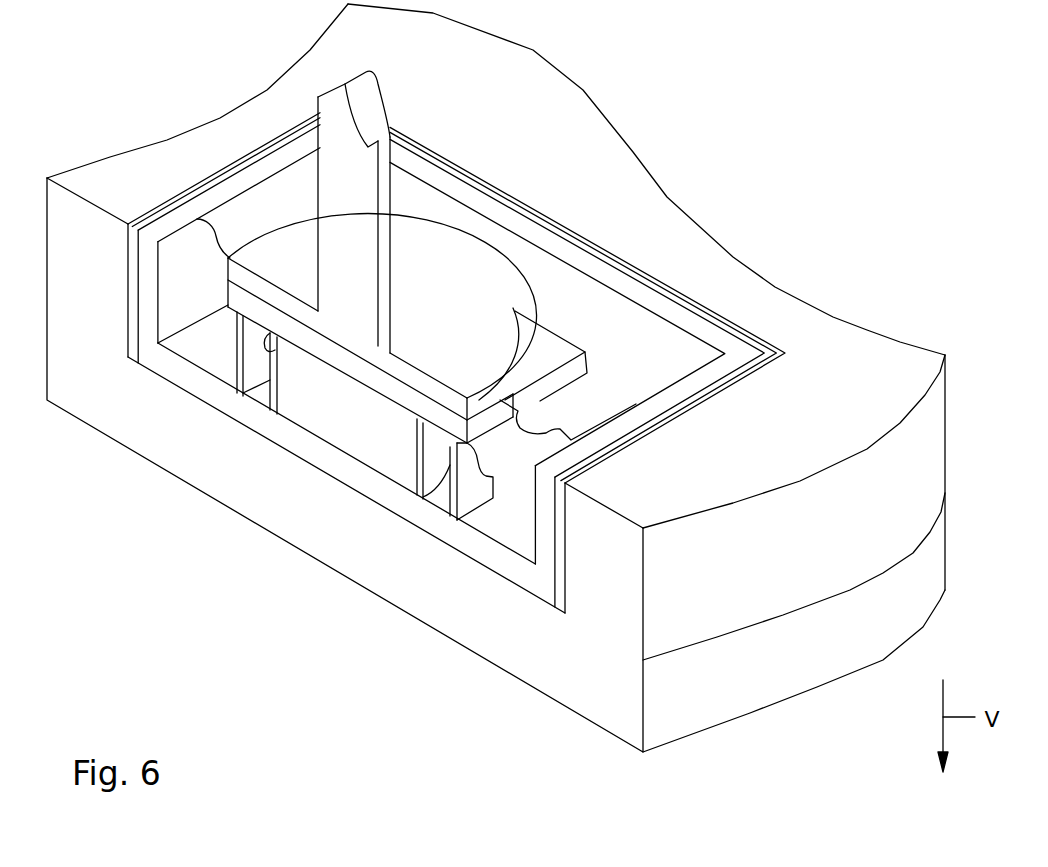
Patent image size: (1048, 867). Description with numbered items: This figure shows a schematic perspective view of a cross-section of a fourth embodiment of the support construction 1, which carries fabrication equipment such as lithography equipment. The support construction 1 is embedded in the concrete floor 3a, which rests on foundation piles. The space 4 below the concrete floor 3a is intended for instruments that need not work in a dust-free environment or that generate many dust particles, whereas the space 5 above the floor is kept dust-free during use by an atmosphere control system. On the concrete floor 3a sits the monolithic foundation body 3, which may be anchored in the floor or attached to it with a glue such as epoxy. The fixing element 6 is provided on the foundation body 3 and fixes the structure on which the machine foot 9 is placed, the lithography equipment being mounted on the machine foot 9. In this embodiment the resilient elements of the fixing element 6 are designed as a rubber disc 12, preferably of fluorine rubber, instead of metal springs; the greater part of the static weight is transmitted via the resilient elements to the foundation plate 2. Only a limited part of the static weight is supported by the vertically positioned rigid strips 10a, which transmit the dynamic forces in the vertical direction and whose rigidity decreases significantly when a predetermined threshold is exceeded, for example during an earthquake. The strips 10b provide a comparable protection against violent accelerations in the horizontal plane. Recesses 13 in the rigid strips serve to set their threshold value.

The support construction 1 is at (541, 388).
The foundation plate 2 is at (217, 345).
The foundation body 3 is at (916, 470).
The concrete floor 3a is at (916, 572).
The space below the concrete floor 4 is at (521, 773).
The space above the concrete floor 5 is at (830, 282).
The fixing element 6 is at (618, 383).
The machine foot 9 is at (427, 272).
The vertically positioned rigid strips 10a is at (465, 492).
The horizontal rigid strips 10b is at (583, 412).
The rubber disc 12 is at (358, 427).
The recesses 13 is at (227, 240).